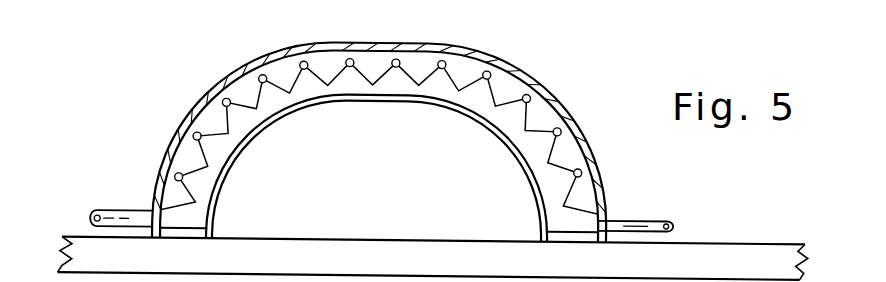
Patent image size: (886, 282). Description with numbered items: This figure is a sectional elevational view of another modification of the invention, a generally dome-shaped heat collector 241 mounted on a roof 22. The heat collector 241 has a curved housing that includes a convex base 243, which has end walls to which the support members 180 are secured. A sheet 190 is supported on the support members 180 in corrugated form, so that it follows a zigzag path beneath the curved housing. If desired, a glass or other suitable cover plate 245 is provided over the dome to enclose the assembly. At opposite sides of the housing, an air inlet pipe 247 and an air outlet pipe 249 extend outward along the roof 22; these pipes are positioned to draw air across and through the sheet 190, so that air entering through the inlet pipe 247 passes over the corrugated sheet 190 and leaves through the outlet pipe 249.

The roof 22 is at (82, 253).
The support members 180 is at (350, 58).
The sheet 190 is at (226, 83).
The heat collector 241 is at (400, 123).
The convex base 243 is at (513, 147).
The cover plate 245 is at (462, 52).
The air inlet pipe 247 is at (125, 216).
The air outlet pipe 249 is at (641, 220).